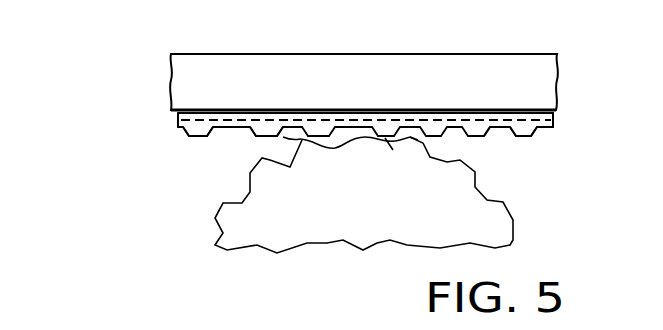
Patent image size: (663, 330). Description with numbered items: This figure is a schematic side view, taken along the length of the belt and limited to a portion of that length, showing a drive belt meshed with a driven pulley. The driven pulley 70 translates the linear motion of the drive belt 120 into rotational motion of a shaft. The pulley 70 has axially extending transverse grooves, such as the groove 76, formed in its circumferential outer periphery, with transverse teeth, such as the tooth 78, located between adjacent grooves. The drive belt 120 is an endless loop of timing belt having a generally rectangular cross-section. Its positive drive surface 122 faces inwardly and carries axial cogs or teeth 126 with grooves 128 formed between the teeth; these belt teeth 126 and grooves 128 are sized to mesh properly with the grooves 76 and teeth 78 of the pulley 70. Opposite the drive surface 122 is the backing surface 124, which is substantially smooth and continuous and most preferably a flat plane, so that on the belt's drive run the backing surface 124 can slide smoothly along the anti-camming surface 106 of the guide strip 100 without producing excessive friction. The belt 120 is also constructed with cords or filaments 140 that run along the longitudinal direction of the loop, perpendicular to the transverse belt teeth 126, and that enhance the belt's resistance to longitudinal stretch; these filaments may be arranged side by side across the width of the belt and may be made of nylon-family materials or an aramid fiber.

The guide strip 100 is at (272, 97).
The anti-camming surface 106 is at (343, 113).
The drive belt 120 is at (177, 117).
The positive drive surface 122 is at (230, 133).
The backing surface 124 is at (252, 110).
The belt teeth 126 is at (528, 136).
The belt grooves 128 is at (498, 133).
The cords or filaments 140 is at (556, 123).
The driven pulley 70 is at (308, 225).
The groove 76 is at (390, 152).
The tooth 78 is at (418, 140).